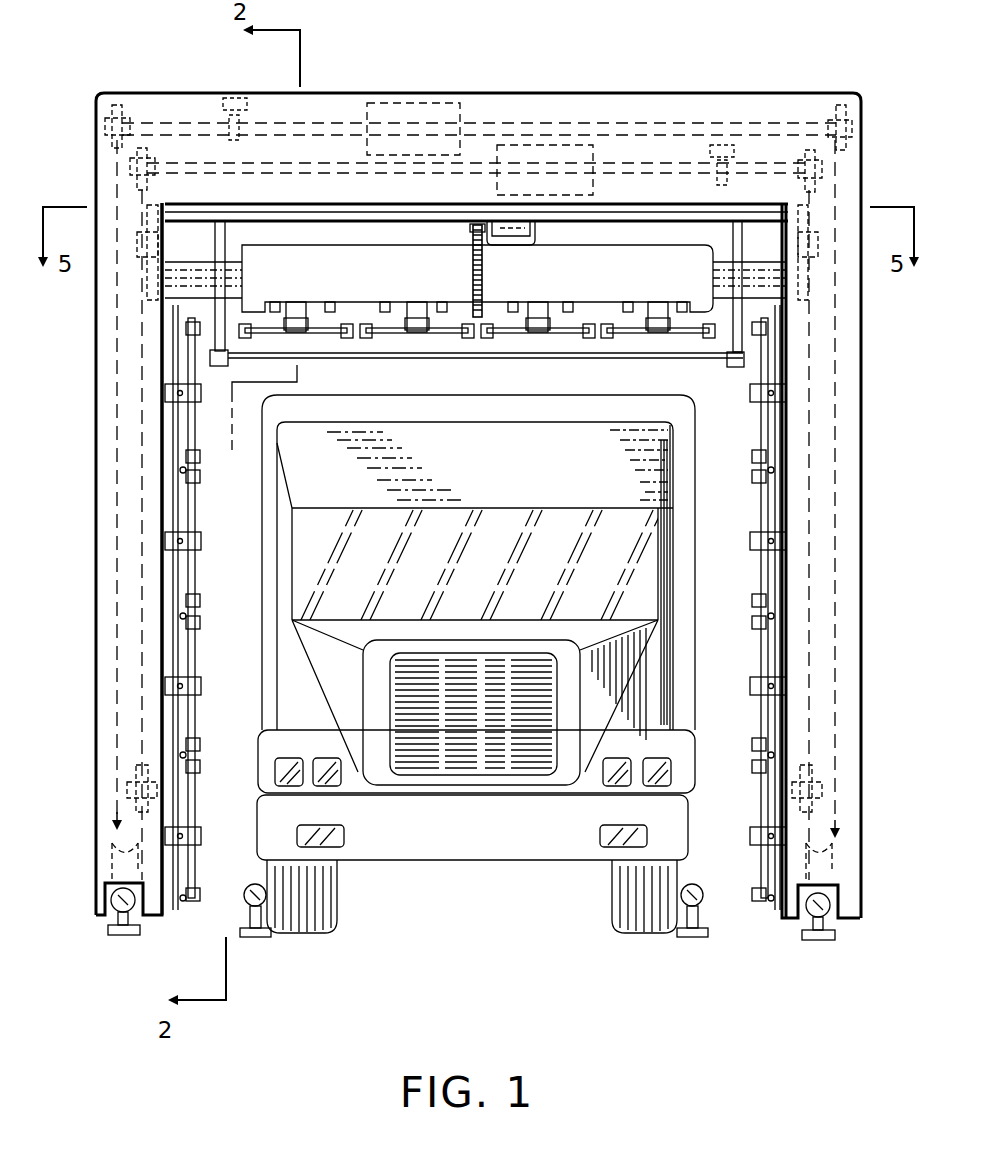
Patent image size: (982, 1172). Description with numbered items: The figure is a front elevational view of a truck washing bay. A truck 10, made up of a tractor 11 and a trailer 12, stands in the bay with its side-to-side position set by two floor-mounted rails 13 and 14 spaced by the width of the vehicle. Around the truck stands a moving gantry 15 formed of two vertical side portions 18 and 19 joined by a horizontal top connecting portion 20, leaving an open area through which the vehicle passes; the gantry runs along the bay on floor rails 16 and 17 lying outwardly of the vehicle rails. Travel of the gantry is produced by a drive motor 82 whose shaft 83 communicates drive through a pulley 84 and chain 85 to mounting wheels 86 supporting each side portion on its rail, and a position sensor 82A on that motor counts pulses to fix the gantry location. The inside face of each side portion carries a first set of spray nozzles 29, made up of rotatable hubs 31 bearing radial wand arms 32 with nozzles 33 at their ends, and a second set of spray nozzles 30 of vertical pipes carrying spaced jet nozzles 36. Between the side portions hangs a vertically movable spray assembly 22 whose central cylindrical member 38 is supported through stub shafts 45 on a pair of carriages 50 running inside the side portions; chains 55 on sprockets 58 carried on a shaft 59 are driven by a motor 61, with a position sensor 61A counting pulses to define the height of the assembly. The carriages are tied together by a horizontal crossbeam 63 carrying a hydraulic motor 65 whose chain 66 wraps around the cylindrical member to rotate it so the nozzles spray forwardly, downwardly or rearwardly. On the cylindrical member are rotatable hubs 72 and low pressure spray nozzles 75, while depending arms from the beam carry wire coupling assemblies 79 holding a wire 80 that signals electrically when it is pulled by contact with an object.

The truck 10 is at (476, 676).
The tractor 11 is at (478, 724).
The trailer 12 is at (400, 397).
The rail 13 is at (255, 884).
The rail 14 is at (695, 884).
The moving gantry 15 is at (478, 460).
The rail 16 is at (112, 912).
The rail 17 is at (826, 908).
The vertical side portion 18 is at (861, 582).
The vertical side portion 19 is at (96, 690).
The horizontal top connecting portion 20 is at (636, 92).
The spray assembly 22 is at (510, 373).
The first set of spray nozzles 29 is at (472, 646).
The second set of spray nozzles 30 is at (172, 922).
The hub 31 is at (201, 688).
The wand arm 32 is at (196, 720).
The nozzle 33 is at (198, 748).
The jet nozzle 36 is at (186, 755).
The central cylindrical member 38 is at (655, 287).
The stub shaft 45 is at (228, 262).
The carriage 50 is at (148, 285).
The chain 55 is at (142, 565).
The sprocket 58 is at (160, 182).
The shaft 59 is at (285, 185).
The motor 61 is at (493, 185).
The position sensor 61A is at (708, 150).
The horizontal crossbeam 63 is at (405, 222).
The hydraulic motor 65 is at (536, 232).
The chain 66 is at (486, 288).
The hub 72 is at (294, 312).
The low pressure spray nozzle 75 is at (406, 312).
The wire coupling assembly 79 is at (735, 368).
The wire 80 is at (590, 362).
The drive motor 82 is at (466, 110).
The position sensor 82A is at (228, 100).
The shaft 83 is at (318, 122).
The pulley 84 is at (110, 106).
The chain 85 is at (117, 405).
The mounting wheel 86 is at (105, 860).